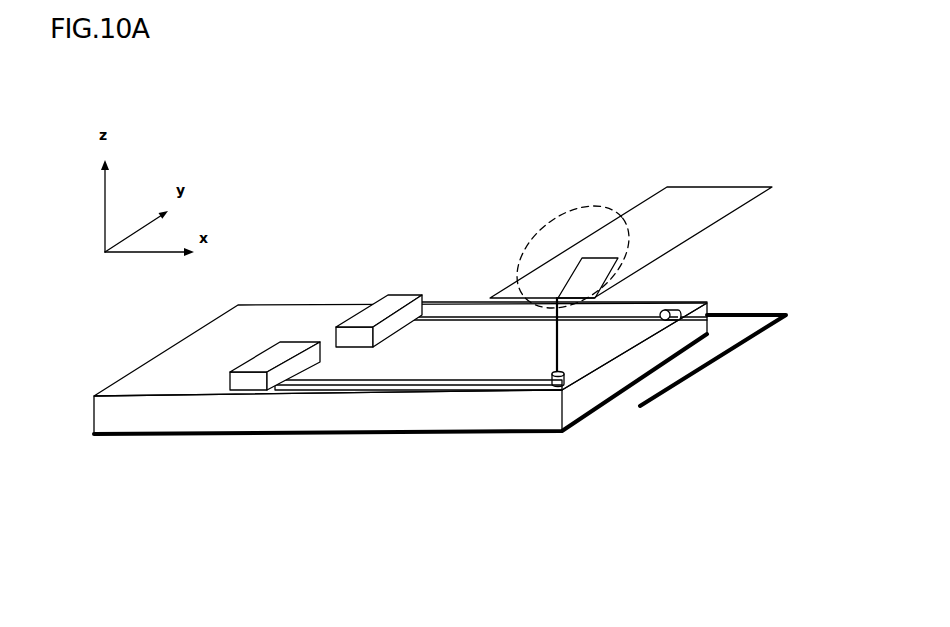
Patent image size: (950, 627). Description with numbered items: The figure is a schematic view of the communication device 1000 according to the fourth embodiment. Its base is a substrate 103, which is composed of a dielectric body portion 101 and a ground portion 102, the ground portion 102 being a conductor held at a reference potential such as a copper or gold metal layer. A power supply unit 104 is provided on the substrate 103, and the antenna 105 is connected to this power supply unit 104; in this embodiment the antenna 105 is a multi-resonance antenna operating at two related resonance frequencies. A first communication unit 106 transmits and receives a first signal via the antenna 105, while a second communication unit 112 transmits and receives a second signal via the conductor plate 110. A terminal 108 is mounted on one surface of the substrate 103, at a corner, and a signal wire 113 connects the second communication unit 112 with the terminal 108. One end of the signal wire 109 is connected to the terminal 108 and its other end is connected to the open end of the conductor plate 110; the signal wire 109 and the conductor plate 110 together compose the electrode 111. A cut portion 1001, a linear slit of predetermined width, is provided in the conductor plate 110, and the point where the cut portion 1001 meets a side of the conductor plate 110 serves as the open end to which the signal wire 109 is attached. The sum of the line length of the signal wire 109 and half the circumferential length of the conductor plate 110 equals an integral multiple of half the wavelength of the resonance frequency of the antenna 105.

The communication device 1000 is at (658, 72).
The cut portion 1001 is at (597, 216).
The dielectric body portion 101 is at (110, 417).
The ground portion 102 is at (202, 433).
The substrate 103 is at (223, 517).
The power supply unit 104 is at (665, 312).
The antenna 105 is at (732, 315).
The first communication unit 106 is at (375, 313).
The terminal 108 is at (564, 386).
The signal wire 109 is at (556, 340).
The conductor plate 110 is at (513, 288).
The electrode 111 is at (582, 562).
The second communication unit 112 is at (281, 360).
The signal wire 113 is at (423, 384).